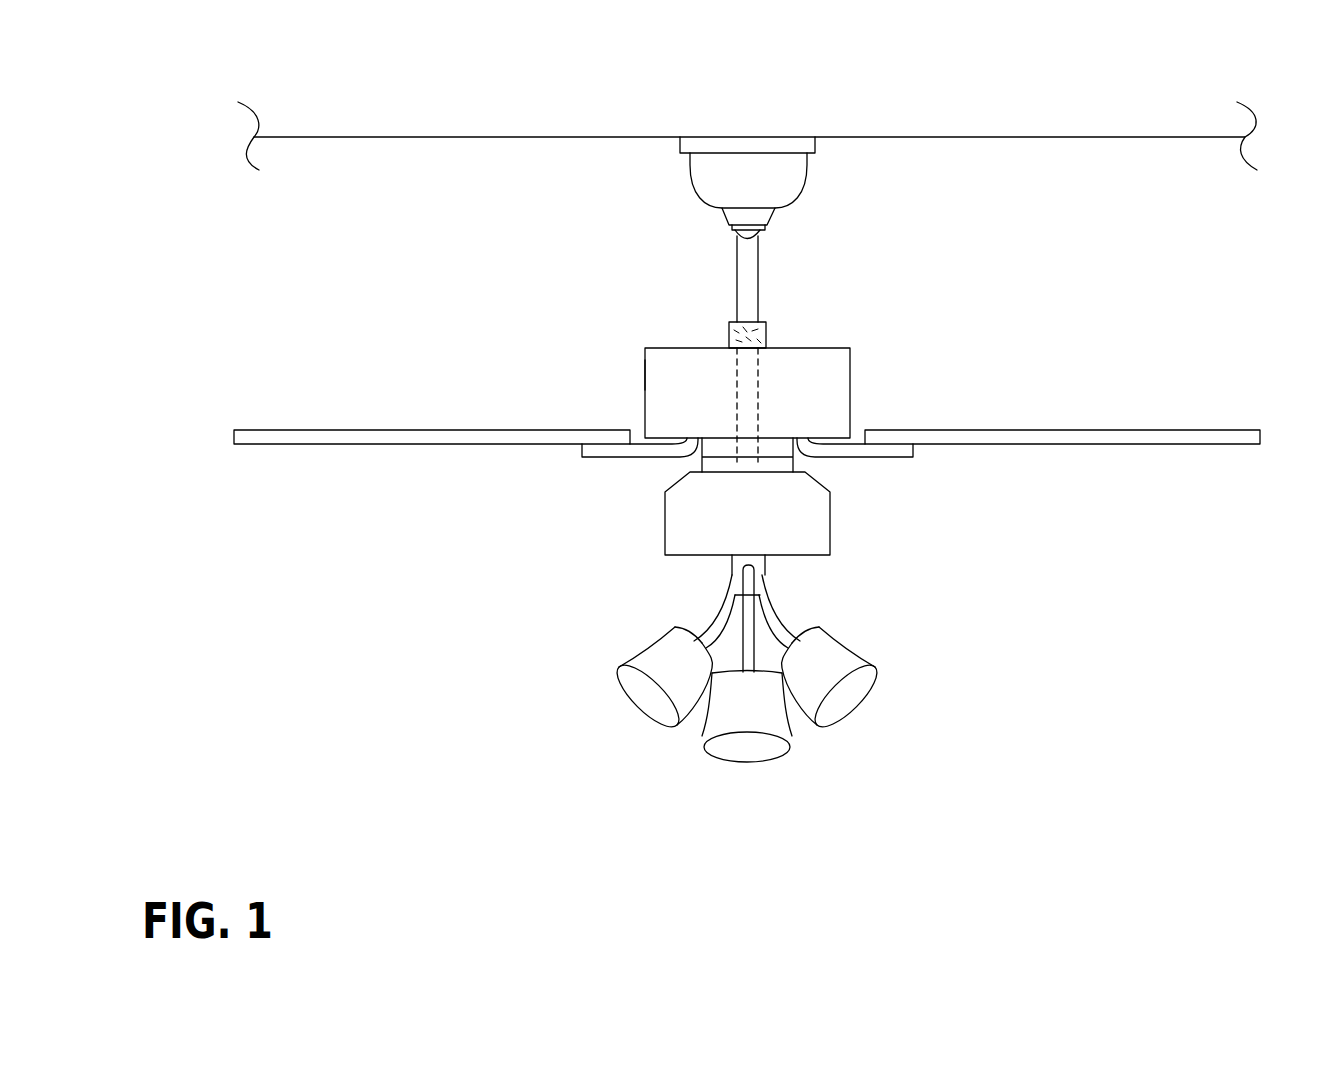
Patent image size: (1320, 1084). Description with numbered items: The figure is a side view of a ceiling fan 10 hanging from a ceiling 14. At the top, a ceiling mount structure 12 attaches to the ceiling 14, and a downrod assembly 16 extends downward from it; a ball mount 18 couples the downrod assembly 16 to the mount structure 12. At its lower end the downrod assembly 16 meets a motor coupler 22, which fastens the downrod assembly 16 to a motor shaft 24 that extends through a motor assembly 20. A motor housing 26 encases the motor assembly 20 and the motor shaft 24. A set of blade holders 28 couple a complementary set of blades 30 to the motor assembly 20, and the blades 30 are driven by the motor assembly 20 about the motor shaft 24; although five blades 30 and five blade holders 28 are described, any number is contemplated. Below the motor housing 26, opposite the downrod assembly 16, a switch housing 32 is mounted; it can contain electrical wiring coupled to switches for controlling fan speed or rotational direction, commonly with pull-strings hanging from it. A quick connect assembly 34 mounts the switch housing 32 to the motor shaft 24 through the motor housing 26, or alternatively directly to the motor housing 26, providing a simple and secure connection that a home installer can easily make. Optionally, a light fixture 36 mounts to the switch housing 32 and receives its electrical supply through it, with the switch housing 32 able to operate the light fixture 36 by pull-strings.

The ceiling fan 10 is at (1117, 257).
The ceiling mount structure 12 is at (808, 160).
The ceiling 14 is at (420, 137).
The downrod assembly 16 is at (758, 286).
The ball mount 18 is at (740, 242).
The motor assembly 20 is at (668, 348).
The motor coupler 22 is at (766, 340).
The motor shaft 24 is at (760, 386).
The motor housing 26 is at (645, 375).
The blade holders 28 is at (617, 458).
The blades 30 is at (392, 430).
The switch housing 32 is at (830, 517).
The quick connect assembly 34 is at (716, 481).
The light fixture 36 is at (650, 757).